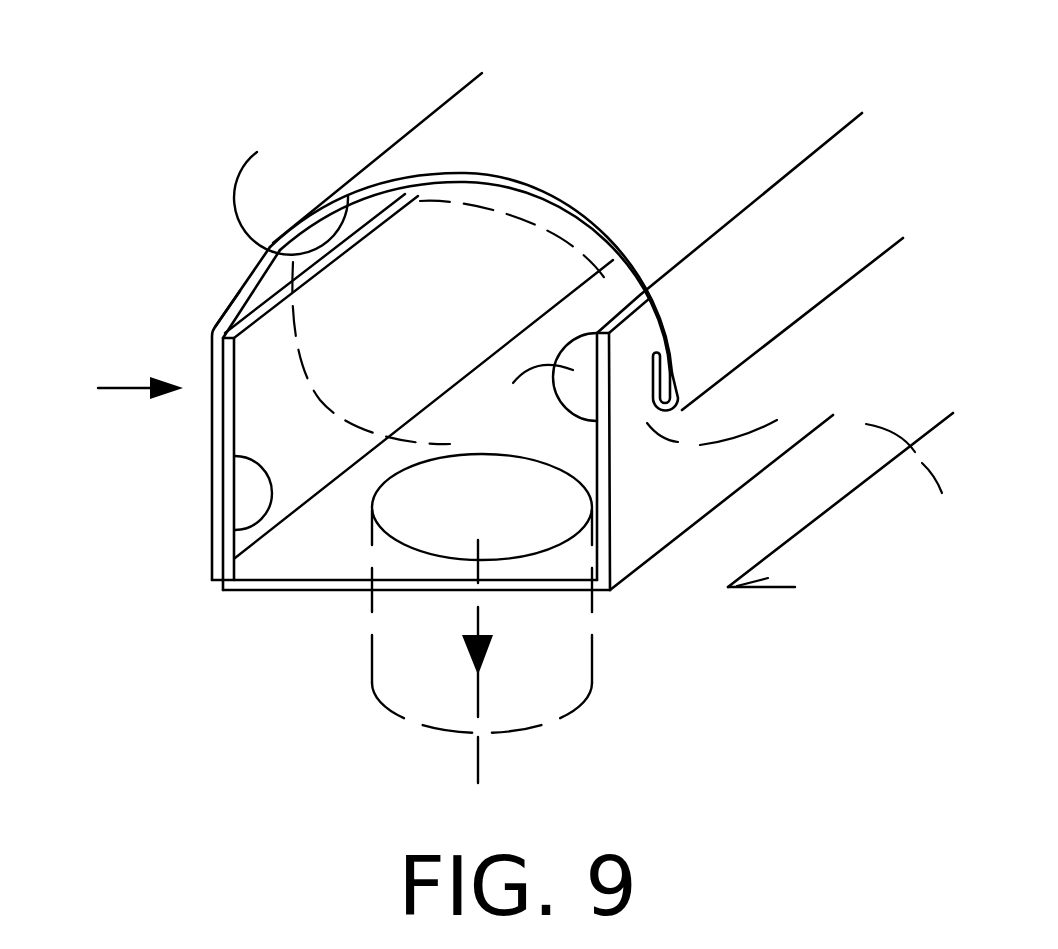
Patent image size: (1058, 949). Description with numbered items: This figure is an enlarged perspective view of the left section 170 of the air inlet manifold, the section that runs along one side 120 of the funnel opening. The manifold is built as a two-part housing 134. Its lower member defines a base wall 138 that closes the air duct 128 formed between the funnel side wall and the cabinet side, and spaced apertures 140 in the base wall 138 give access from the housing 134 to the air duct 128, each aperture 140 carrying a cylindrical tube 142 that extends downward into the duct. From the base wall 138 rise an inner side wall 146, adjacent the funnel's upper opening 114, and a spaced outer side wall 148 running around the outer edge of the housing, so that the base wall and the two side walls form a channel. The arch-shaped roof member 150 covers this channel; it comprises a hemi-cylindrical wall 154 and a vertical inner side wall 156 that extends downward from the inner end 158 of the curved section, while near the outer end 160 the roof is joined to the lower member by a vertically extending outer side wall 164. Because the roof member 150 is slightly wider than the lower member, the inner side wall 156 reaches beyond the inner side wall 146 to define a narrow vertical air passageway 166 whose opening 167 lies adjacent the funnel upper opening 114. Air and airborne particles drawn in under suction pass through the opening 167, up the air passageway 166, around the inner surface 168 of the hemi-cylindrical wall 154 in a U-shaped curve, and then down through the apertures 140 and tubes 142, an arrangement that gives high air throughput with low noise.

The upper opening 114 is at (730, 588).
The side of the funnel opening 120 is at (805, 548).
The air duct 128 is at (572, 638).
The two-part housing 134 is at (186, 168).
The base wall 138 is at (287, 566).
The aperture 140 is at (493, 470).
The cylindrical tube 142 is at (403, 680).
The inner side wall 146 is at (598, 450).
The outer side wall 148 is at (237, 528).
The roof member 150 is at (430, 137).
The hemi-cylindrical wall 154 is at (567, 112).
The vertical inner side wall 156 is at (743, 317).
The inner end 158 is at (703, 212).
The outer end 160 is at (233, 300).
The vertically extending outer side wall 164 is at (217, 352).
The air passageway 166 is at (618, 310).
The opening 167 is at (645, 417).
The inner surface 168 is at (291, 187).
The left section 170 is at (114, 390).